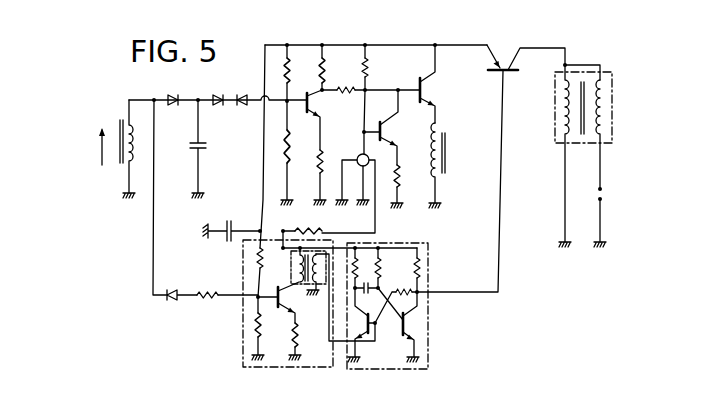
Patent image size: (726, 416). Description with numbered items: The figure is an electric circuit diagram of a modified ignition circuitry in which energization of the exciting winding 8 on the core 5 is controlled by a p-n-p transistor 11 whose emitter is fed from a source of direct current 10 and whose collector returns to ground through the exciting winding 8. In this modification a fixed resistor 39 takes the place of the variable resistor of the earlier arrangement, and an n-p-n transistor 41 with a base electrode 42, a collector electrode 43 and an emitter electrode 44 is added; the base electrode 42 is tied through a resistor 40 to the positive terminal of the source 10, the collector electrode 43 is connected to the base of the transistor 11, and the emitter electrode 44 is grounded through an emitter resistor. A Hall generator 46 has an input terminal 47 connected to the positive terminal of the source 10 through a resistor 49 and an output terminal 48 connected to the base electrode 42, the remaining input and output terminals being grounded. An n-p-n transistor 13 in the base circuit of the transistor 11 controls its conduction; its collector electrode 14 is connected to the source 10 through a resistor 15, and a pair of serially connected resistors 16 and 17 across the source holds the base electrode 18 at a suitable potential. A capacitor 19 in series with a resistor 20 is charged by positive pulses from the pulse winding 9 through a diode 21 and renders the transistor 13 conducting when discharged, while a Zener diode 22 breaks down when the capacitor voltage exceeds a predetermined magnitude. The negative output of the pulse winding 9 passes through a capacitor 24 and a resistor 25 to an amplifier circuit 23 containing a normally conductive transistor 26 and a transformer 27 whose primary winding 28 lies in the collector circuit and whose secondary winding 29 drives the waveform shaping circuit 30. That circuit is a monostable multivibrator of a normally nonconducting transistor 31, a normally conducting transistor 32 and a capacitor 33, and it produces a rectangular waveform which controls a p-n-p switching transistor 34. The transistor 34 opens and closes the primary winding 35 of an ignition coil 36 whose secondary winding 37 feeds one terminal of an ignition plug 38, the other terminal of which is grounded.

The core 5 is at (120, 124).
The exciting winding 8 is at (430, 150).
The pulse winding 9 is at (135, 149).
The source of direct current 10 is at (231, 222).
The transistor 11 is at (447, 97).
The transistor 13 is at (333, 109).
The collector electrode 14 is at (310, 85).
The resistor 15 is at (312, 67).
The resistor 16 is at (277, 73).
The resistor 17 is at (287, 146).
The base electrode 18 is at (308, 129).
The capacitor 19 is at (206, 146).
The resistor 20 is at (313, 177).
The rectifier or diode 21 is at (175, 94).
The Zener diode 22 is at (242, 94).
The amplifier circuit 23 is at (300, 367).
The capacitor 24 is at (174, 288).
The resistor 25 is at (209, 291).
The transistor 26 is at (303, 305).
The transformer 27 is at (291, 256).
The primary winding 28 is at (297, 268).
The secondary winding 29 is at (318, 283).
The waveform shaping circuit 30 is at (388, 369).
The transistor 31 is at (361, 325).
The transistor 32 is at (425, 332).
The capacitor 33 is at (366, 295).
The semiconductor switching element 34 is at (513, 50).
The primary winding 35 is at (560, 103).
The ignition coil 36 is at (613, 74).
The secondary winding 37 is at (605, 107).
The ignition plug 38 is at (605, 196).
The fixed resistor 39 is at (347, 79).
The resistor 40 is at (377, 67).
The transistor 41 is at (408, 139).
The base electrode 42 is at (367, 125).
The collector electrode 43 is at (399, 110).
The emitter electrode 44 is at (390, 172).
The Hall generator 46 is at (357, 155).
The input terminal 47 is at (372, 164).
The output terminal 48 is at (362, 134).
The resistor 49 is at (320, 227).